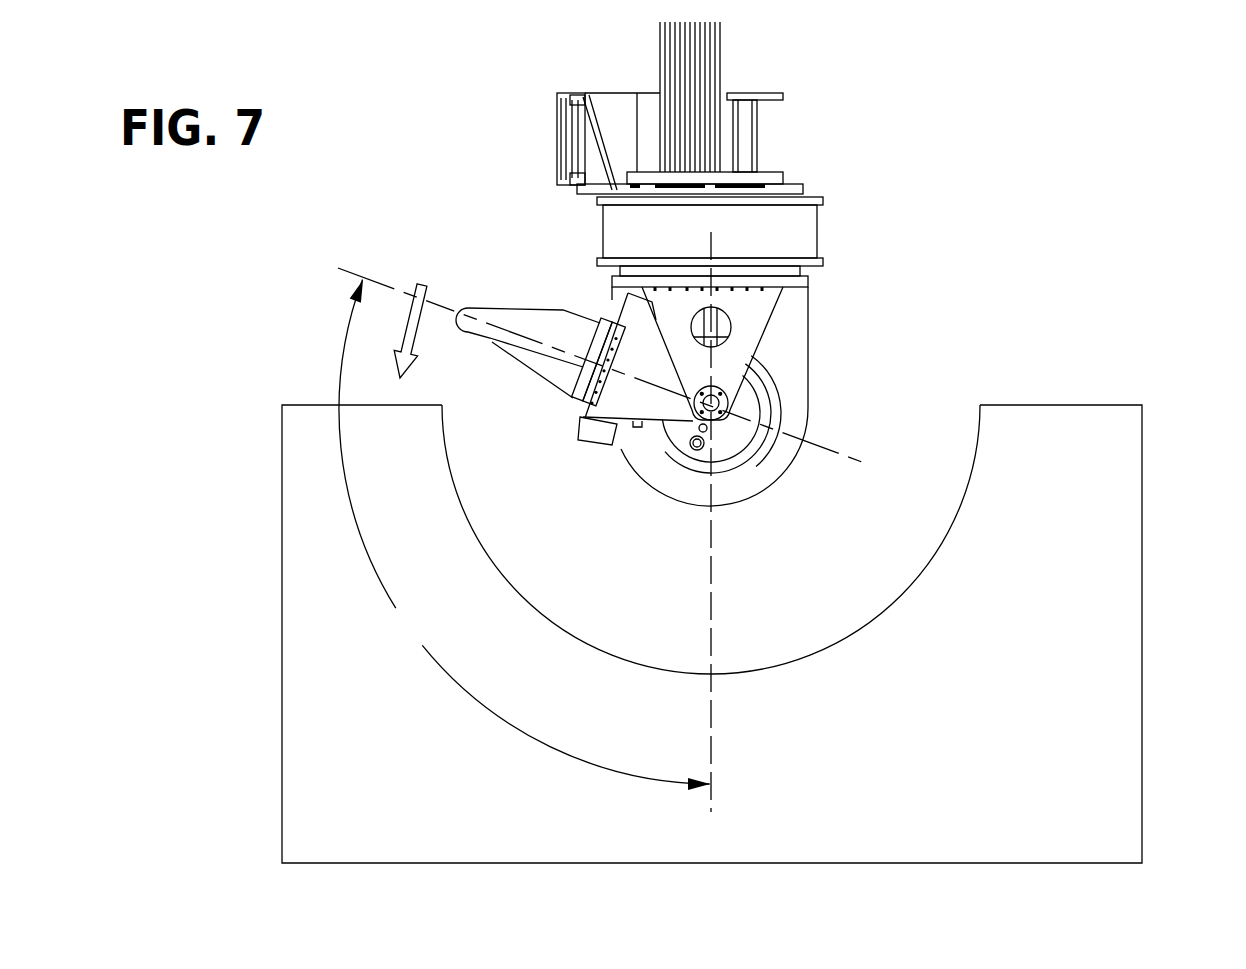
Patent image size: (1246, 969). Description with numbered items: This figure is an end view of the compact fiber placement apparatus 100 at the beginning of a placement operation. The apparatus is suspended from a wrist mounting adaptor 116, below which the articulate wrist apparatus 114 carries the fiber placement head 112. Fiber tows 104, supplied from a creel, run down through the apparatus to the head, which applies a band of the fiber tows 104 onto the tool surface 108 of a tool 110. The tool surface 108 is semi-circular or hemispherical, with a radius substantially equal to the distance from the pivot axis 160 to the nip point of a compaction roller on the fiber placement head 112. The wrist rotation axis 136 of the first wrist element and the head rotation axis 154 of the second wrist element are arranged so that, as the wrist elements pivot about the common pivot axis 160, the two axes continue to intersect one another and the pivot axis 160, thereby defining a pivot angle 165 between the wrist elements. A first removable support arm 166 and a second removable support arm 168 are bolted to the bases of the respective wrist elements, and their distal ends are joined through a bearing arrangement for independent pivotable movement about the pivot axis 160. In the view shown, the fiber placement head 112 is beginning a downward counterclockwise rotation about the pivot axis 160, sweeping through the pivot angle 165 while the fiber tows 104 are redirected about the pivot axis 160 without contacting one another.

The compact fiber placement apparatus 100 is at (892, 162).
The fiber tows 104 is at (720, 56).
The tool surface 108 is at (948, 530).
The tool 110 is at (1118, 633).
The fiber placement head 112 is at (520, 357).
The articulate wrist apparatus 114 is at (797, 347).
The wrist mounting adaptor 116 is at (803, 232).
The wrist rotation axis 136 is at (712, 532).
The head rotation axis 154 is at (840, 455).
The common pivot axis 160 is at (727, 388).
The pivot angle 165 is at (524, 535).
The first removable support arm 166 is at (750, 308).
The second removable support arm 168 is at (620, 398).